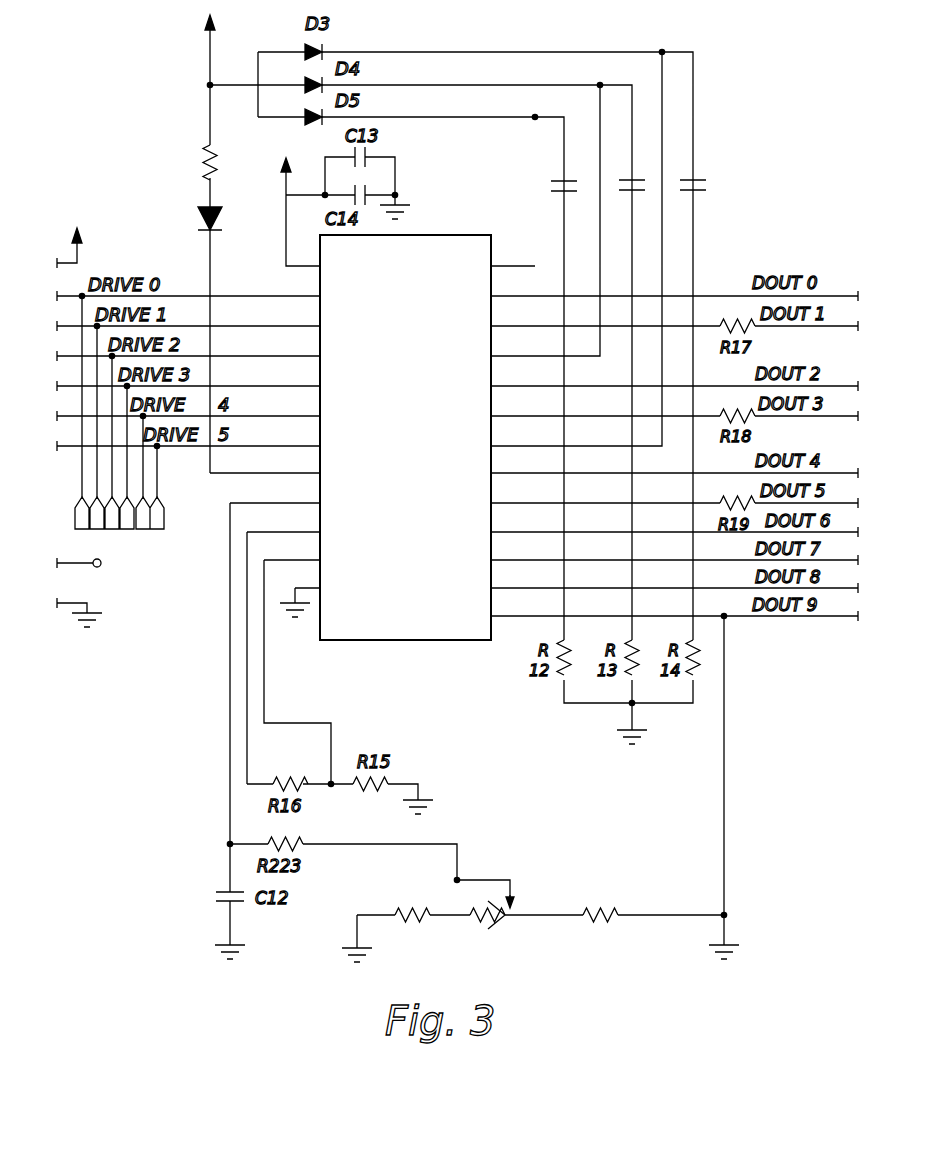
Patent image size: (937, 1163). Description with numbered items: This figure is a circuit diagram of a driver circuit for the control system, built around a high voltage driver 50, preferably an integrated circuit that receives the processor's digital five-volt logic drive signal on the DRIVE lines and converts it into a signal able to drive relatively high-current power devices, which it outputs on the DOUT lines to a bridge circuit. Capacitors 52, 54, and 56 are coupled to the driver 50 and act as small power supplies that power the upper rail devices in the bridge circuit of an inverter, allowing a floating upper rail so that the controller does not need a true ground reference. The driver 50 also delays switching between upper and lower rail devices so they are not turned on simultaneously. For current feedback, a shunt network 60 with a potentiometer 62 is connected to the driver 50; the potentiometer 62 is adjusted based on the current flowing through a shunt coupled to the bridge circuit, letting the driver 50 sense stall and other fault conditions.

The high voltage driver 50 is at (393, 628).
The capacitor 52 is at (574, 173).
The capacitor 54 is at (641, 170).
The capacitor 56 is at (697, 175).
The shunt network 60 is at (487, 814).
The potentiometer 62 is at (494, 877).